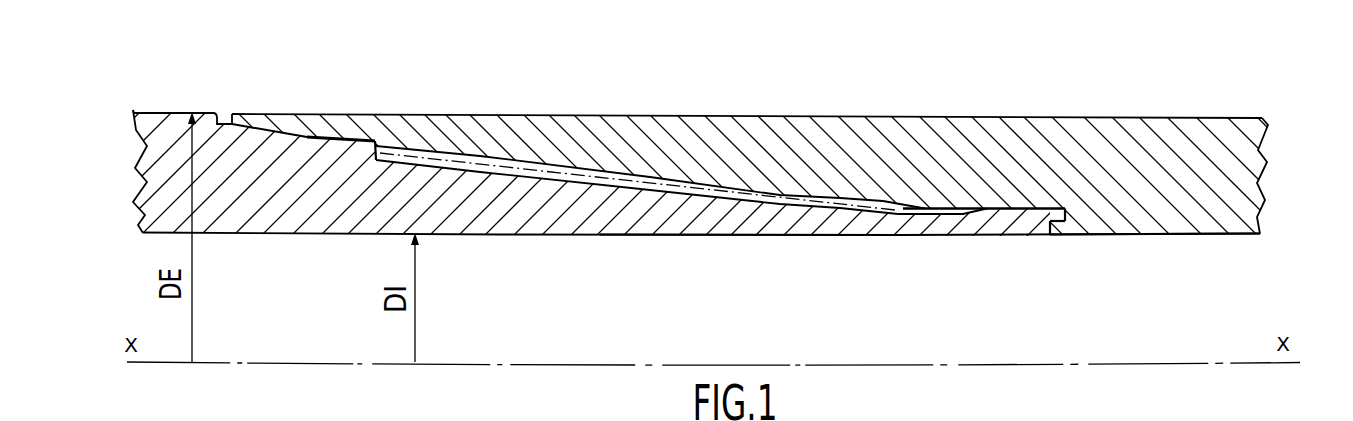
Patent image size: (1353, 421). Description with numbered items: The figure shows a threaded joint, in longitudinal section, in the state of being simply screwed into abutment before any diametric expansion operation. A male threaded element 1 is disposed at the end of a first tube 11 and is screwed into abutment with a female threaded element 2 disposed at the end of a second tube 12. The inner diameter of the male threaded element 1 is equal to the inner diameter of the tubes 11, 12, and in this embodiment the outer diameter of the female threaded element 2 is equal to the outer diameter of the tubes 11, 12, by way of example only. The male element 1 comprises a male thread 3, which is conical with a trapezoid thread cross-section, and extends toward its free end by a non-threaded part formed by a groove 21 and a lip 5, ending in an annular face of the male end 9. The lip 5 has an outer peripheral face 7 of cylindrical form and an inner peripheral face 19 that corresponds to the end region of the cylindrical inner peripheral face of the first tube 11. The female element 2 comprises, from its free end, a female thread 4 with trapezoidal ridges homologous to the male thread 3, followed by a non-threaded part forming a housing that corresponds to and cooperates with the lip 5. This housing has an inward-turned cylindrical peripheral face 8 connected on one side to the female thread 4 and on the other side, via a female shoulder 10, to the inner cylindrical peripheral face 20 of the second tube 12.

The male threaded element 1 is at (590, 240).
The female threaded element 2 is at (752, 107).
The male thread 3 is at (475, 156).
The female thread 4 is at (670, 193).
The lip 5 is at (990, 220).
The outer peripheral face 7 is at (973, 228).
The peripheral face 8 is at (1038, 208).
The annular face of the male end 9 is at (1035, 216).
The female shoulder 10 is at (1079, 224).
The first tube 11 is at (268, 184).
The second tube 12 is at (1150, 178).
The inner peripheral face 19 is at (773, 235).
The inner cylindrical peripheral face 20 is at (1183, 234).
The groove 21 is at (935, 205).